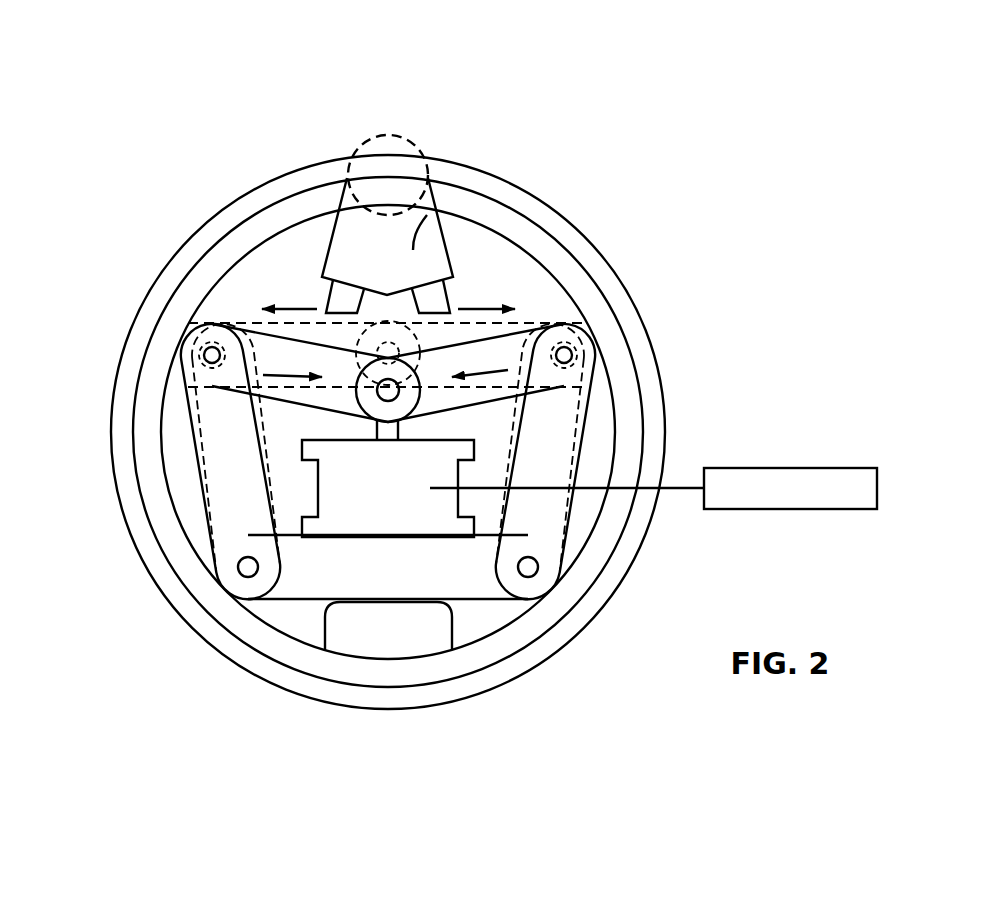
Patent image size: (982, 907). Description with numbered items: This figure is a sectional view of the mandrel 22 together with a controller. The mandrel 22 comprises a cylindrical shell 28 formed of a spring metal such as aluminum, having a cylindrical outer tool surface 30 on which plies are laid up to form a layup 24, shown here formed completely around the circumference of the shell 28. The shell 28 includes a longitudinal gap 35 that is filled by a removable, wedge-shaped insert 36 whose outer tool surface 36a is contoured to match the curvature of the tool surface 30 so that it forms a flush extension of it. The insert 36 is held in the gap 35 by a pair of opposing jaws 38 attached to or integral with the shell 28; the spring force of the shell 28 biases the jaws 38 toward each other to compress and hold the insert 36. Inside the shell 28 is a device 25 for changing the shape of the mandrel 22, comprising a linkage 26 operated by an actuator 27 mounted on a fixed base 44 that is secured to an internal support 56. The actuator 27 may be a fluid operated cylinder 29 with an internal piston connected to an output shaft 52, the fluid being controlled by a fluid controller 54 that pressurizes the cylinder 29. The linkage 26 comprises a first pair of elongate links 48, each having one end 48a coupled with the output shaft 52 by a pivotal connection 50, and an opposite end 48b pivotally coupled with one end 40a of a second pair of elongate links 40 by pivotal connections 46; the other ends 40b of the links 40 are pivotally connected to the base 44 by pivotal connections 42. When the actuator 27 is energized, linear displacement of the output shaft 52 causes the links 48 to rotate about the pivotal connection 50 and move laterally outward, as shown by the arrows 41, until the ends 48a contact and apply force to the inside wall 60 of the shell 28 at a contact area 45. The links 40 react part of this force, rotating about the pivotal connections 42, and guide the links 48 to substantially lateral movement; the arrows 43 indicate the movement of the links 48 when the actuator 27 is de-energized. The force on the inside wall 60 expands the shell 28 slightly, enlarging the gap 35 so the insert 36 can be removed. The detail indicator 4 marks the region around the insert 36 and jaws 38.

The mandrel 22 is at (148, 122).
The detail view indicator 4 is at (360, 147).
The layup 24 is at (650, 385).
The device for changing the shape of the mandrel 25 is at (240, 567).
The linkage 26 is at (604, 450).
The actuator 27 is at (200, 530).
The cylindrical shell 28 is at (540, 220).
The fluid operated cylinder 29 is at (432, 500).
The outer tool surface 30 is at (527, 208).
The gap 35 is at (356, 176).
The removable insert 36 is at (427, 215).
The outer tool surface of the insert 36a is at (400, 170).
The jaws 38 is at (313, 223).
The second pair of elongate links 40 is at (196, 445).
The one end of links 40 40a is at (195, 400).
The other end of links 40 40b is at (210, 580).
The arrows 41 is at (300, 300).
The pivotal connections 42 is at (205, 598).
The arrows 43 is at (300, 405).
The fixed base 44 is at (250, 605).
The contact area 45 is at (177, 352).
The pivotal connections 46 is at (190, 345).
The first pair of elongate links 48 is at (197, 350).
The one end of links 48 48a is at (197, 323).
The opposite end of links 48 48b is at (255, 345).
The pivotal connection 50 is at (385, 424).
The output shaft 52 is at (313, 487).
The fluid controller 54 is at (808, 468).
The internal support 56 is at (347, 640).
The inside wall 60 is at (607, 400).